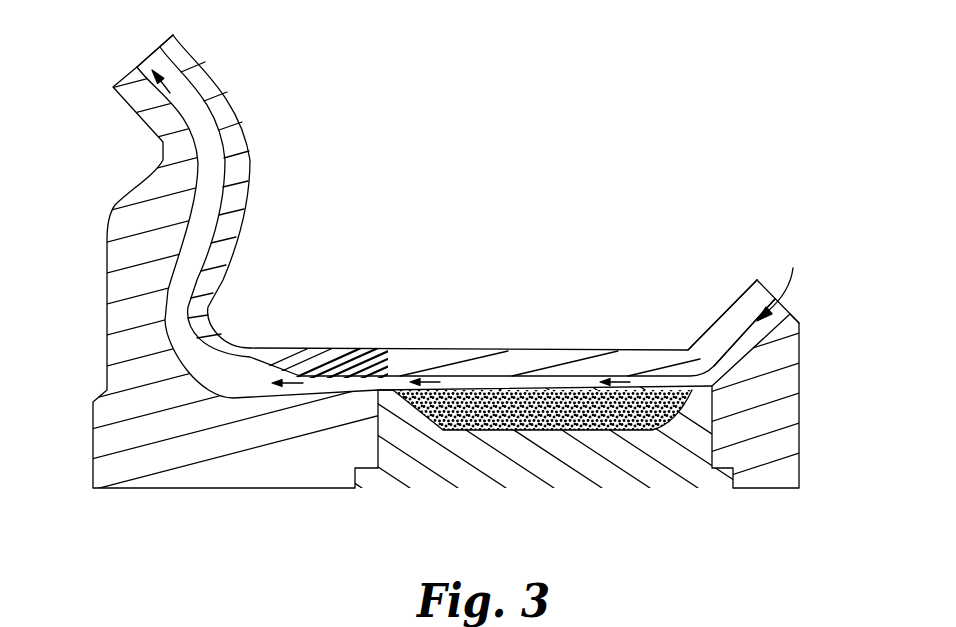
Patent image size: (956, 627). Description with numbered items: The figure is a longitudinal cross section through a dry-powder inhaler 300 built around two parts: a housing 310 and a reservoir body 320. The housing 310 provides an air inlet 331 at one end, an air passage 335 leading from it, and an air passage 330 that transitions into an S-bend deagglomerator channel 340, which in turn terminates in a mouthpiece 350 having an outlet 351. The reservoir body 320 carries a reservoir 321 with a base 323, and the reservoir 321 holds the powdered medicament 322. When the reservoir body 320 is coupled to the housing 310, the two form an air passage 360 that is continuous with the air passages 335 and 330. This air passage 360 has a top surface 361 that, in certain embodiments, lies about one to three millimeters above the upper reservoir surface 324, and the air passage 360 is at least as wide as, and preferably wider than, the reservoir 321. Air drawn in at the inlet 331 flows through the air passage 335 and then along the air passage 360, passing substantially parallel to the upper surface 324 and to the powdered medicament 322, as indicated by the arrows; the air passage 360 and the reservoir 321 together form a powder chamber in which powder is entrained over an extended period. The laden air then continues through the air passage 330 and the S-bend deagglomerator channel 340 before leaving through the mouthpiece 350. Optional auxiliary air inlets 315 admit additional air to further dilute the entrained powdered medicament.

The dry-powder inhaler 300 is at (441, 294).
The housing 310 is at (441, 281).
The auxiliary air inlets 315 is at (376, 352).
The reservoir body 320 is at (691, 520).
The reservoir 321 is at (512, 445).
The powdered medicament 322 is at (443, 418).
The base 323 is at (609, 435).
The upper reservoir surface 324 is at (387, 390).
The air passage 330 is at (327, 384).
The air inlet 331 is at (787, 282).
The air passage 335 is at (742, 333).
The S-bend deagglomerator channel 340 is at (207, 232).
The mouthpiece 350 is at (176, 45).
The outlet 351 is at (150, 61).
The air passage 360 is at (506, 330).
The top surface 361 is at (510, 377).